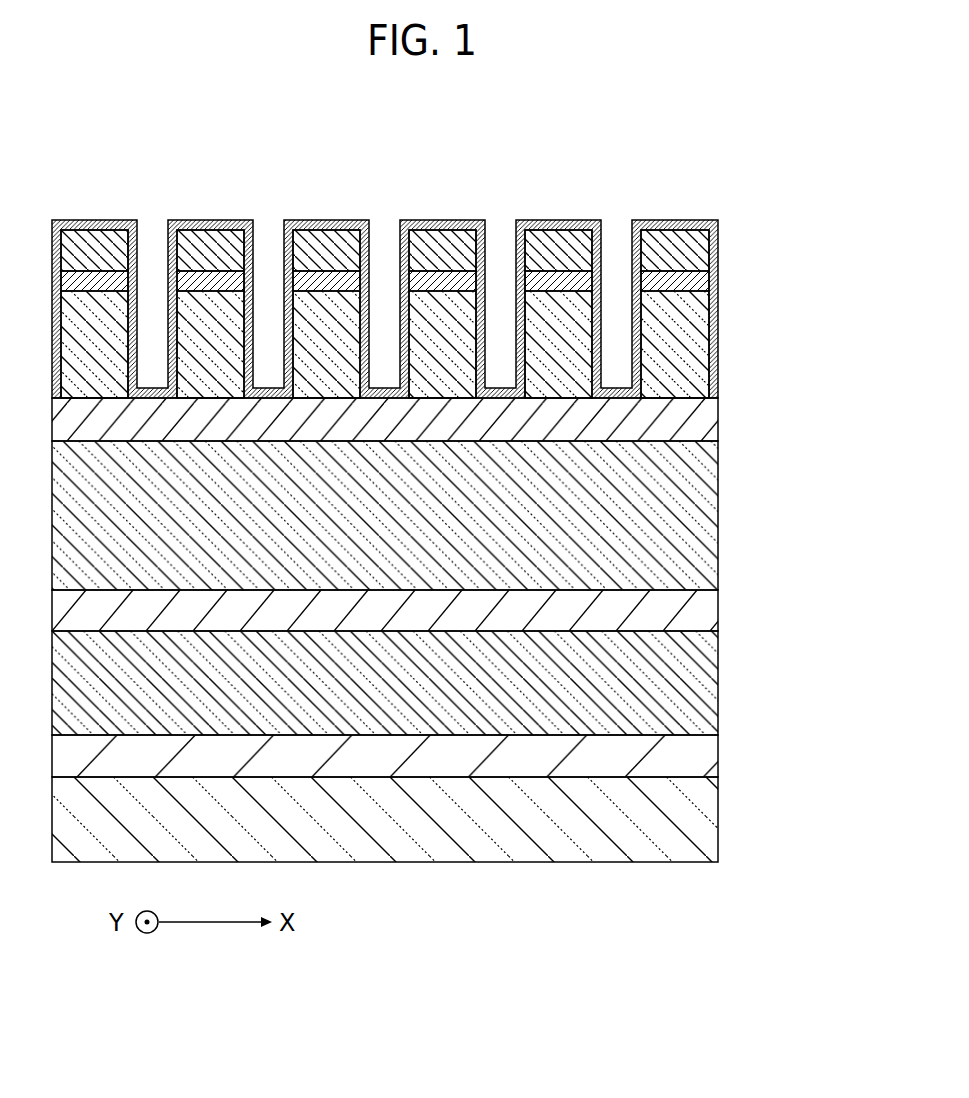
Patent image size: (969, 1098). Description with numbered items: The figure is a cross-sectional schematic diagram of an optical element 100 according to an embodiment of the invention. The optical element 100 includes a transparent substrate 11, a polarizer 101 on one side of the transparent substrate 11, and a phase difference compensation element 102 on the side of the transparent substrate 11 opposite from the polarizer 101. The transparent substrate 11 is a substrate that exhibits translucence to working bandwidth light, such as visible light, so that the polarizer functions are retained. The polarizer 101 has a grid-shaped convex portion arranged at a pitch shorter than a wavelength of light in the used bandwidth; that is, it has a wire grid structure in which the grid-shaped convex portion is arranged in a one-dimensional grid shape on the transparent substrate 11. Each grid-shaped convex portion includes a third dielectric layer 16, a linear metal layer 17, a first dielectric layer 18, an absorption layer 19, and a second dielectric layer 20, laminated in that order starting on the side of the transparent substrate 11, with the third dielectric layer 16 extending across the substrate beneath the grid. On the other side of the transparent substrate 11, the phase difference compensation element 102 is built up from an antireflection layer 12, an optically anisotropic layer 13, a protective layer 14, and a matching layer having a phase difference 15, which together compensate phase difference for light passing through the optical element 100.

The optical element 100 is at (849, 182).
The polarizer 101 is at (827, 200).
The phase difference compensation element 102 is at (827, 592).
The transparent substrate 11 is at (708, 508).
The antireflection layer 12 is at (710, 815).
The optically anisotropic layer 13 is at (710, 680).
The protective layer 14 is at (710, 758).
The matching layer having a phase difference 15 is at (708, 615).
The third dielectric layer 16 is at (710, 418).
The linear metal layer 17 is at (692, 343).
The first dielectric layer 18 is at (717, 282).
The absorption layer 19 is at (718, 247).
The second dielectric layer 20 is at (721, 228).